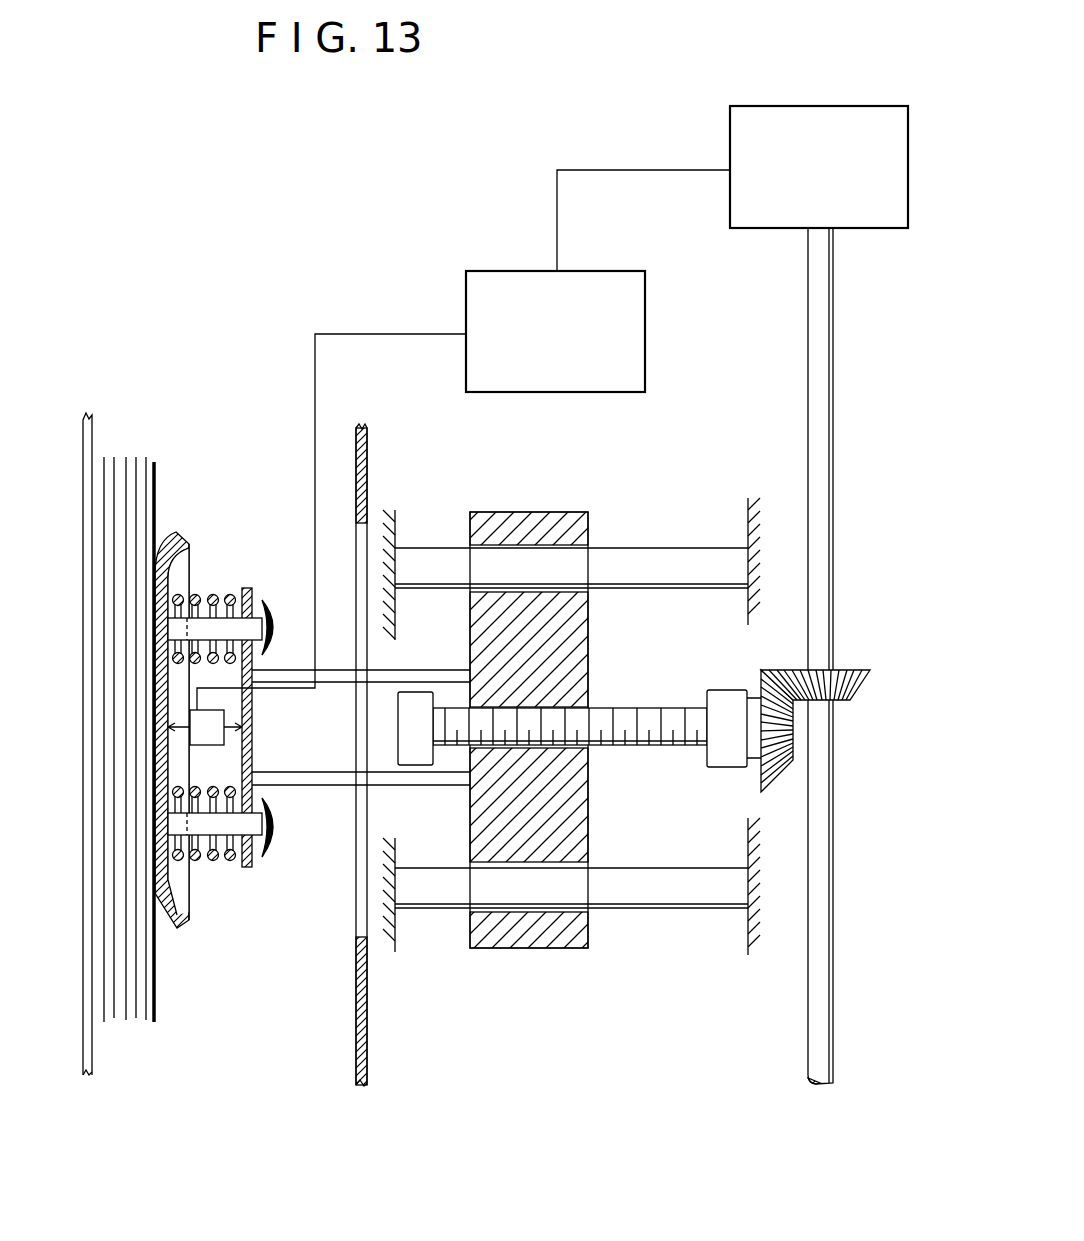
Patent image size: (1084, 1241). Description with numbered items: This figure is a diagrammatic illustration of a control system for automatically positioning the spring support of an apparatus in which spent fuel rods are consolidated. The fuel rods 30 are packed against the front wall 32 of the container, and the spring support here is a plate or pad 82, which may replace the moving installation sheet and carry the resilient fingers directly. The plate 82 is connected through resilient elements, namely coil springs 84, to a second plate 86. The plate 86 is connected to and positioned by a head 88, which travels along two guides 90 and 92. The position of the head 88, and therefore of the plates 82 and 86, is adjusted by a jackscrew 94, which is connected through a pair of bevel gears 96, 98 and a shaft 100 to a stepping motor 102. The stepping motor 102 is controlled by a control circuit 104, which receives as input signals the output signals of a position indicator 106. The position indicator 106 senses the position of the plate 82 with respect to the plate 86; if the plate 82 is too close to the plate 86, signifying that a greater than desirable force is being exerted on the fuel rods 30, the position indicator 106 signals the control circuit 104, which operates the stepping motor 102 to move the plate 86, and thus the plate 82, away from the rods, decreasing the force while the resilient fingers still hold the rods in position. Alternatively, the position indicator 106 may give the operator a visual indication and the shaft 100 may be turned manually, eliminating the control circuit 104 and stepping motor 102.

The fuel rods 30 is at (108, 468).
The front wall 32 is at (84, 570).
The plate 82 is at (175, 533).
The coil springs 84 is at (210, 597).
The plate 86 is at (250, 753).
The head 88 is at (590, 780).
The guide 90 is at (682, 548).
The guide 92 is at (684, 908).
The jackscrew 94 is at (664, 757).
The bevel gear 96 is at (760, 780).
The bevel gear 98 is at (893, 637).
The shaft 100 is at (830, 550).
The stepping motor 102 is at (730, 130).
The control circuit 104 is at (466, 310).
The position indicator 106 is at (208, 708).